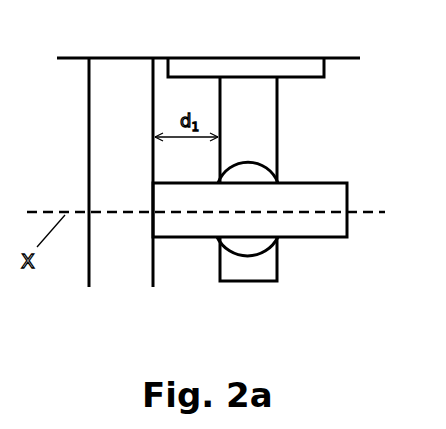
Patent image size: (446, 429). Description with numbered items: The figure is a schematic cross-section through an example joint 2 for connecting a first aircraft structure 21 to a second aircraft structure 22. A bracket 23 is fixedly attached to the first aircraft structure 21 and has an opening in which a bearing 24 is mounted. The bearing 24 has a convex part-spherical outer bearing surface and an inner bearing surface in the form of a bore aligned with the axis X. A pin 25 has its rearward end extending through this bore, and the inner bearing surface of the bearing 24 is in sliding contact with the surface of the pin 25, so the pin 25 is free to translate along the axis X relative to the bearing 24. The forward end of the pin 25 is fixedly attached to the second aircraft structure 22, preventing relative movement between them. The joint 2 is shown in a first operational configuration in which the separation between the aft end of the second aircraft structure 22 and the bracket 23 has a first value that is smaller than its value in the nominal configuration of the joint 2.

The joint 2 is at (323, 260).
The first aircraft structure 21 is at (212, 45).
The second aircraft structure 22 is at (131, 178).
The bracket 23 is at (260, 134).
The bearing 24 is at (265, 175).
The pin 25 is at (299, 202).